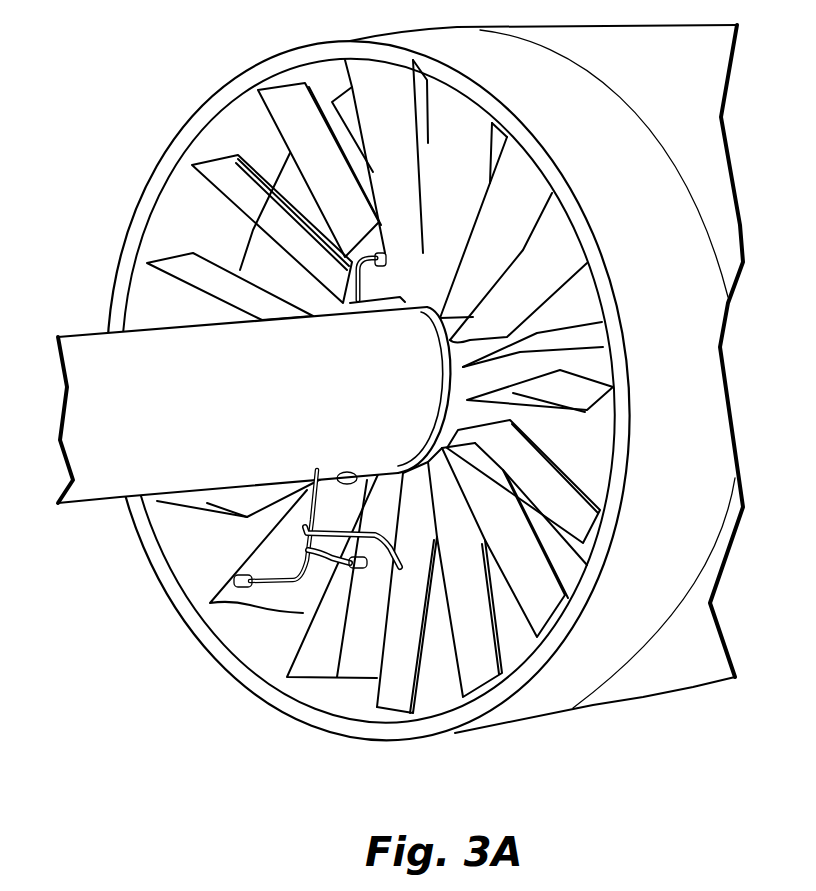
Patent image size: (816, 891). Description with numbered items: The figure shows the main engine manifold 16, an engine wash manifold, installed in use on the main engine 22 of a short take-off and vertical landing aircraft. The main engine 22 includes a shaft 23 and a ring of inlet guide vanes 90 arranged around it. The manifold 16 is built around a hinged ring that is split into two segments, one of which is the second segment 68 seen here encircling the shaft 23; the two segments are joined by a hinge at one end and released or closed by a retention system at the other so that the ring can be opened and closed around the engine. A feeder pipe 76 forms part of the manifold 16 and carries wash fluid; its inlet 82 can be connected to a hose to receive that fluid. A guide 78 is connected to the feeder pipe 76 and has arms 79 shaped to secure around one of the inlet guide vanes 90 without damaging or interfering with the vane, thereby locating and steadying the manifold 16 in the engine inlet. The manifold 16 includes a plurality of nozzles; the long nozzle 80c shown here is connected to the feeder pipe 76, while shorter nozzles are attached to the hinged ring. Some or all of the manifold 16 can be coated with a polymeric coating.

The main engine 22 is at (142, 124).
The shaft 23 is at (98, 357).
The second segment 68 is at (440, 357).
The main engine manifold 16 is at (249, 617).
The inlet 82 is at (208, 607).
The inlet guide vanes 90 is at (307, 652).
The feeder pipe 76 is at (297, 570).
The guide 78 is at (298, 540).
The arms 79 is at (400, 570).
The long nozzle 80c is at (363, 570).